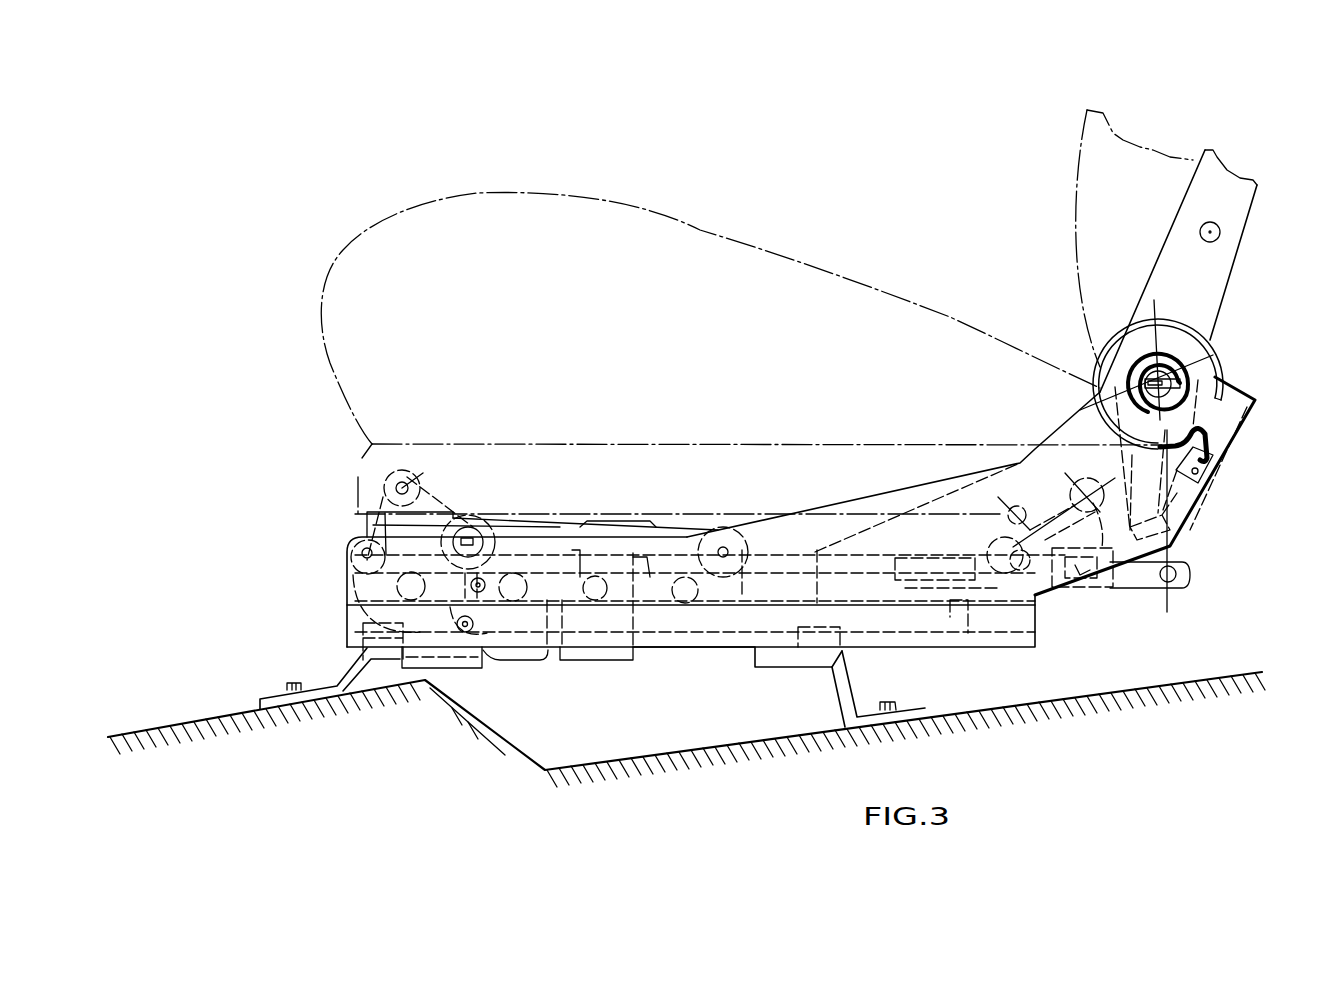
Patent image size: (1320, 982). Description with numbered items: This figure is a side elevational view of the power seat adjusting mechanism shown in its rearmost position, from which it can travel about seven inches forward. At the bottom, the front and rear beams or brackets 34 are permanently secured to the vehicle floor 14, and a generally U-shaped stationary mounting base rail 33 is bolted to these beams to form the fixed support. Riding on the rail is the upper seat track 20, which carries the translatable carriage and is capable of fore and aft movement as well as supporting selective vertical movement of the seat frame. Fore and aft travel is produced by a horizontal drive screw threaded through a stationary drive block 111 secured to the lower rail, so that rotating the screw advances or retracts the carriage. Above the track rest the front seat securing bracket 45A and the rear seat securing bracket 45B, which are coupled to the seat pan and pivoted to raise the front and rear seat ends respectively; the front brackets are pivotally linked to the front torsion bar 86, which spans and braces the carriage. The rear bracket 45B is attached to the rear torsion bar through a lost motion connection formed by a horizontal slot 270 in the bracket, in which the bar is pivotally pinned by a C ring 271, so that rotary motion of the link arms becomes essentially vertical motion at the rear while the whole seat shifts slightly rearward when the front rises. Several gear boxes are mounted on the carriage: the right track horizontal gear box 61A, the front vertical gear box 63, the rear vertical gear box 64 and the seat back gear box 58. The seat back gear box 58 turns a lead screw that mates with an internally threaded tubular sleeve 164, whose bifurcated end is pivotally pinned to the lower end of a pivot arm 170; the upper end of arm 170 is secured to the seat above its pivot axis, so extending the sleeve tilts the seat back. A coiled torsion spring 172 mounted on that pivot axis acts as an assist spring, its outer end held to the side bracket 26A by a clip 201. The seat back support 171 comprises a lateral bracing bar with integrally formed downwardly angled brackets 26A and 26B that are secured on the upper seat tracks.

The floor 14 is at (1242, 672).
The upper seat track 20 is at (1003, 632).
The downwardly angled bracket 26A is at (838, 513).
The downwardly angled bracket 26B is at (903, 510).
The mounting base rail 33 is at (695, 657).
The beams or brackets 34 is at (338, 680).
The front seat securing bracket 45A is at (367, 515).
The rear seat securing bracket 45B is at (1137, 600).
The seat back gear box 58 is at (365, 565).
The right track horizontal gear box 61A is at (512, 657).
The front vertical gear box 63 is at (690, 527).
The rear vertical gear box 64 is at (615, 522).
The front torsion bar 86 is at (473, 522).
The drive block 111 is at (590, 657).
The tubular sleeve 164 is at (1137, 588).
The pivot arm 170 is at (1217, 275).
The seat back support 171 is at (1232, 450).
The coiled torsion spring 172 is at (1185, 383).
The clip 201 is at (1222, 490).
The horizontal slot 270 is at (1087, 577).
The C ring 271 is at (1118, 590).